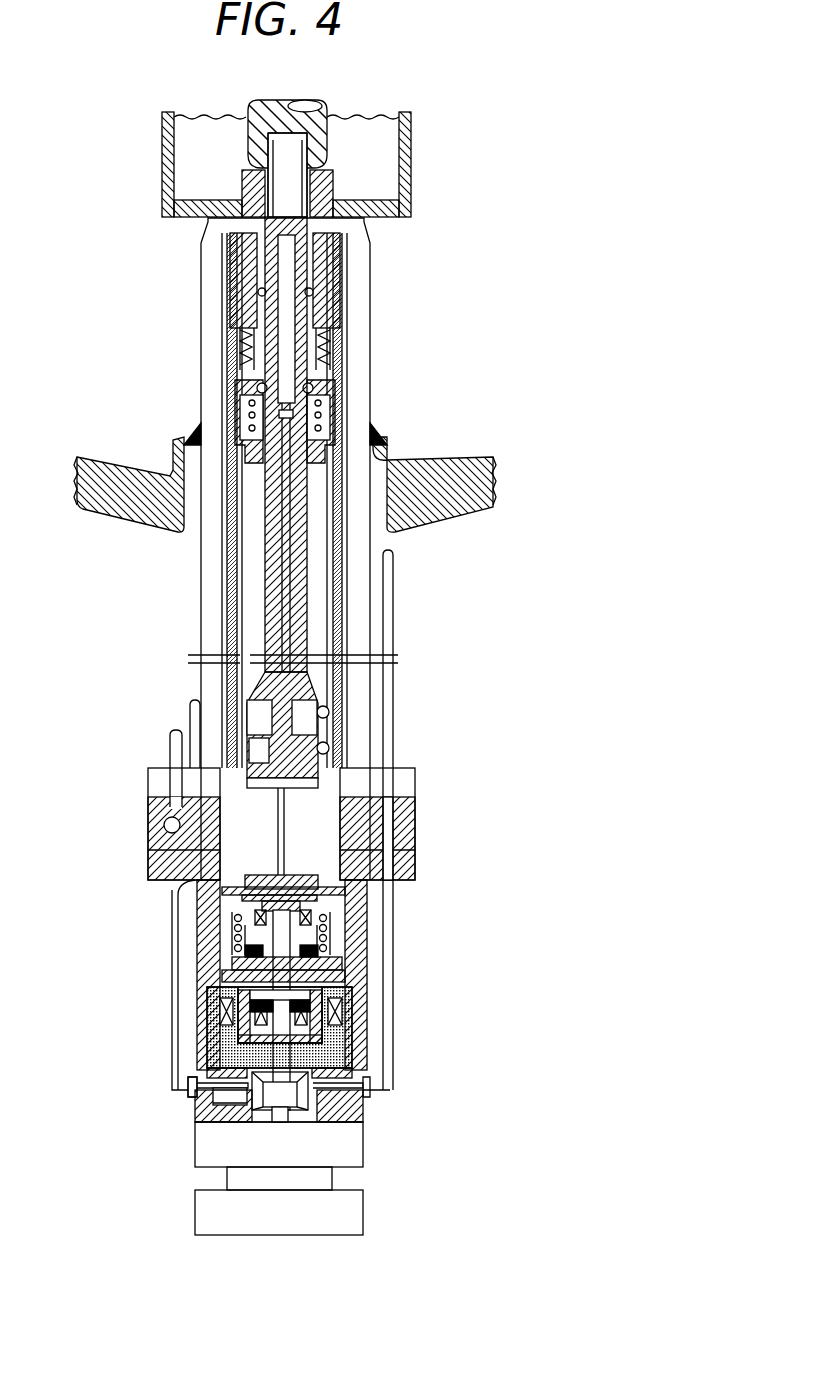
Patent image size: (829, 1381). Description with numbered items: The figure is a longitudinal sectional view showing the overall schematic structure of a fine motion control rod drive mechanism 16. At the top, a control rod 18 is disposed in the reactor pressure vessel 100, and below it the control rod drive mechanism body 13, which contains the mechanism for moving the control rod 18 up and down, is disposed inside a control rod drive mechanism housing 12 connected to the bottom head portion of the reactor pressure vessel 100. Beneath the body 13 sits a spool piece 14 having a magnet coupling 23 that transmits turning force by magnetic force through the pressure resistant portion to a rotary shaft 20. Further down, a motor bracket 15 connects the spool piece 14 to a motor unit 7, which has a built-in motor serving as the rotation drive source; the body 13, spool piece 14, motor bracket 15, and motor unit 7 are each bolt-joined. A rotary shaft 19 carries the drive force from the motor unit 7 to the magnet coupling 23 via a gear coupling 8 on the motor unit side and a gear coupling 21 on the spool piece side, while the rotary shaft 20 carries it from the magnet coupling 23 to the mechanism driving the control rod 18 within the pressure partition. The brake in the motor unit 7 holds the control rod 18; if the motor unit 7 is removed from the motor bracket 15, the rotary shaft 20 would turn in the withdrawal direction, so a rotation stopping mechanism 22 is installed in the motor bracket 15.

The control rod 18 is at (327, 138).
The reactor pressure vessel 100 is at (103, 487).
The control rod drive mechanism body 13 is at (227, 563).
The control rod drive mechanism housing 12 is at (368, 605).
The fine motion control rod drive mechanism 16 is at (342, 700).
The spool piece 14 is at (367, 937).
The rotary shaft 20 is at (277, 978).
The magnet coupling 23 is at (207, 1018).
The gear coupling 21 is at (298, 1090).
The rotation stopping mechanism 22 is at (195, 1097).
The motor bracket 15 is at (363, 1098).
The gear coupling 8 is at (213, 1095).
The rotary shaft 19 is at (282, 1110).
The motor unit 7 is at (382, 1125).